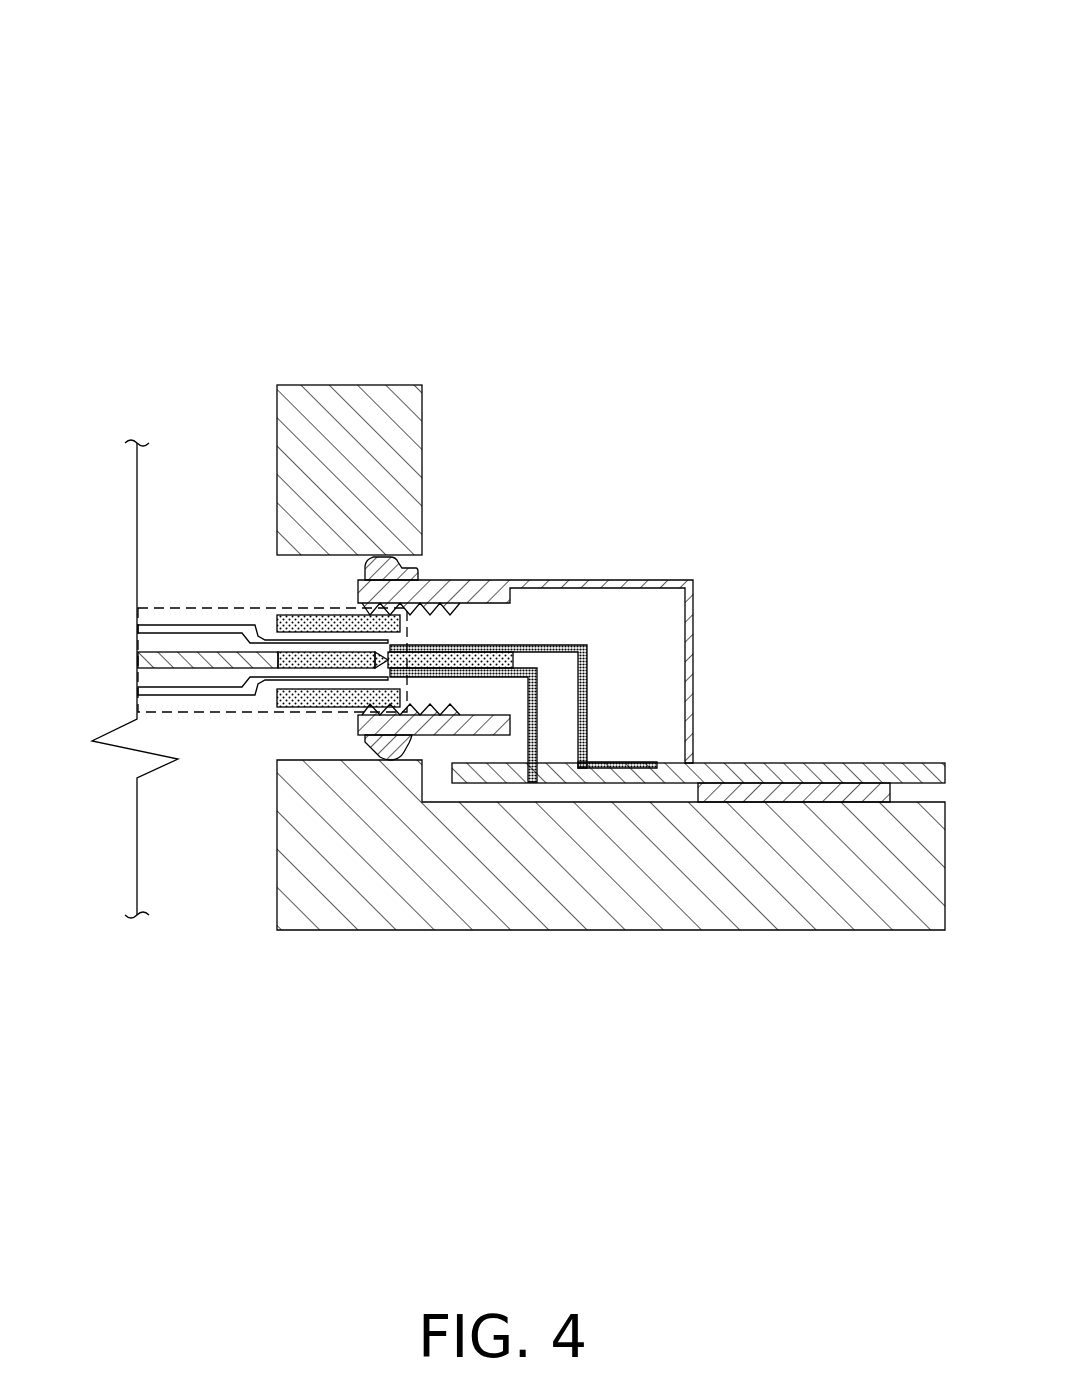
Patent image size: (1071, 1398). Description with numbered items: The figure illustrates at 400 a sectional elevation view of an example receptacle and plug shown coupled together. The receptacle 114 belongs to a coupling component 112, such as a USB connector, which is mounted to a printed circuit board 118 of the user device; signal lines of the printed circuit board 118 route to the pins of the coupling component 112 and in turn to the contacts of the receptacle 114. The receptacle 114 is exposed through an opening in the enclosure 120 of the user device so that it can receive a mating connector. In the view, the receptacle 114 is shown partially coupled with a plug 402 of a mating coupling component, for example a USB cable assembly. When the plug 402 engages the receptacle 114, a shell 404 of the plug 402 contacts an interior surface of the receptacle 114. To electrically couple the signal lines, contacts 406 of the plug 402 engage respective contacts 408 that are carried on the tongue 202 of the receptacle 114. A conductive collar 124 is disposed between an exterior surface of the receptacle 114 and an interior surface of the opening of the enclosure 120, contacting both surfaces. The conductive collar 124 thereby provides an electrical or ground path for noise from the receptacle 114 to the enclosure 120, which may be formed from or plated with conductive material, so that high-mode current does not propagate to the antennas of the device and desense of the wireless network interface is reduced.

The sectional elevation view of receptacle and plug coupled 400 is at (140, 52).
The enclosure 120 is at (355, 385).
The coupling component 112 is at (525, 470).
The receptacle 114 is at (525, 583).
The conductive collar 124 is at (420, 578).
The printed circuit board 118 is at (780, 762).
The contacts of the receptacle 408 is at (470, 645).
The tongue 202 is at (513, 660).
The plug 402 is at (170, 608).
The contacts of the plug 406 is at (335, 632).
The shell 404 is at (306, 710).